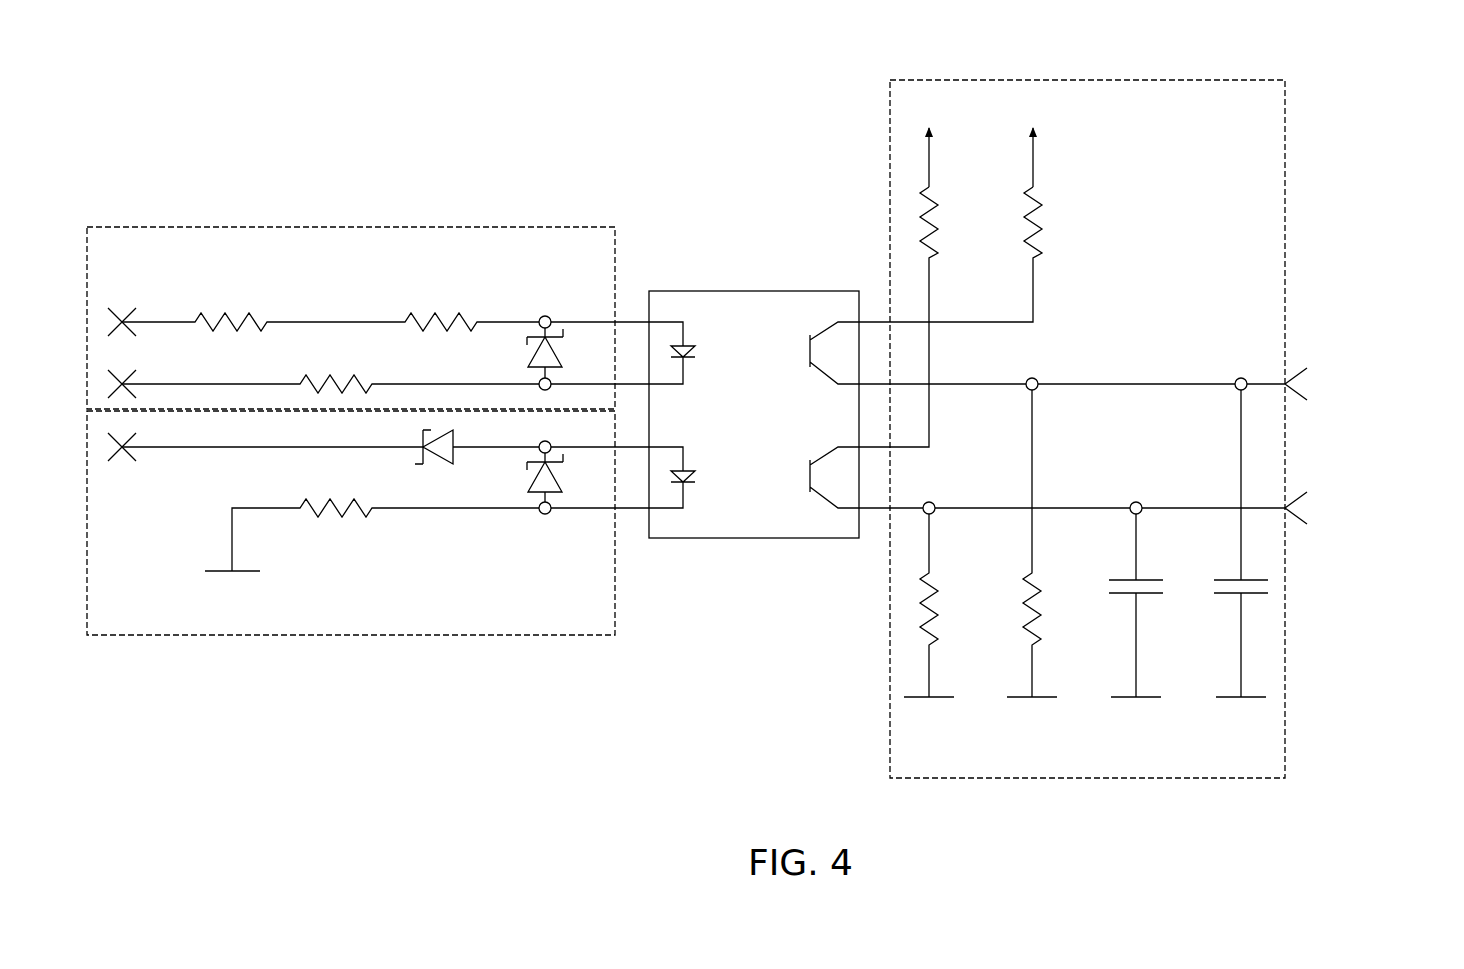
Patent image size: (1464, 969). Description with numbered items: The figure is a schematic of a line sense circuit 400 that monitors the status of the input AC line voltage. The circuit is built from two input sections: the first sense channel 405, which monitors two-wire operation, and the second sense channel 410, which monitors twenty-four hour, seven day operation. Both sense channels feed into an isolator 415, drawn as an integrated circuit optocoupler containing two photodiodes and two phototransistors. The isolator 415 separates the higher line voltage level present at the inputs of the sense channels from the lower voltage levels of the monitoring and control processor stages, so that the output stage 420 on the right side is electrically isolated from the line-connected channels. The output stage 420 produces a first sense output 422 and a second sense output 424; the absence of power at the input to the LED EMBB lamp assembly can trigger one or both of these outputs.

The line sense circuit 400 is at (270, 120).
The sense channel-1 405 is at (345, 226).
The sense channel-2 410 is at (358, 636).
The isolator 415 is at (757, 540).
The output stage 420 is at (1176, 78).
The sense output-1 422 is at (1390, 358).
The sense output-2 424 is at (1390, 480).